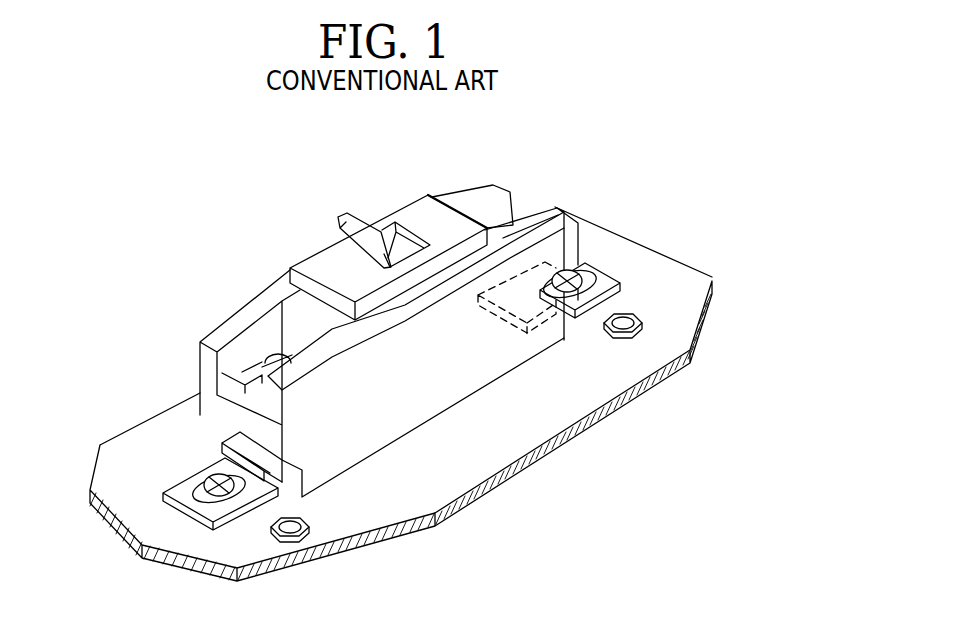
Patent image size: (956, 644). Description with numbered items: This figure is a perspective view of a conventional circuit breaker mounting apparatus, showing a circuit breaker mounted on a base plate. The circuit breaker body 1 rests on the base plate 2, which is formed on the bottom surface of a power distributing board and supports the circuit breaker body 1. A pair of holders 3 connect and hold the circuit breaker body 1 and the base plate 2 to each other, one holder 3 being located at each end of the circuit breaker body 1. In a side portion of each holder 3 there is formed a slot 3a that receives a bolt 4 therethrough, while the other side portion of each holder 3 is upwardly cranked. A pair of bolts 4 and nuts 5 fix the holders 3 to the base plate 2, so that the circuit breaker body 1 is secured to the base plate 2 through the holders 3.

The circuit breaker body 1 is at (216, 310).
The base plate 2 is at (117, 461).
The holder 3 is at (180, 497).
The slot 3a is at (203, 492).
The bolt 4 is at (217, 497).
The nut 5 is at (305, 531).